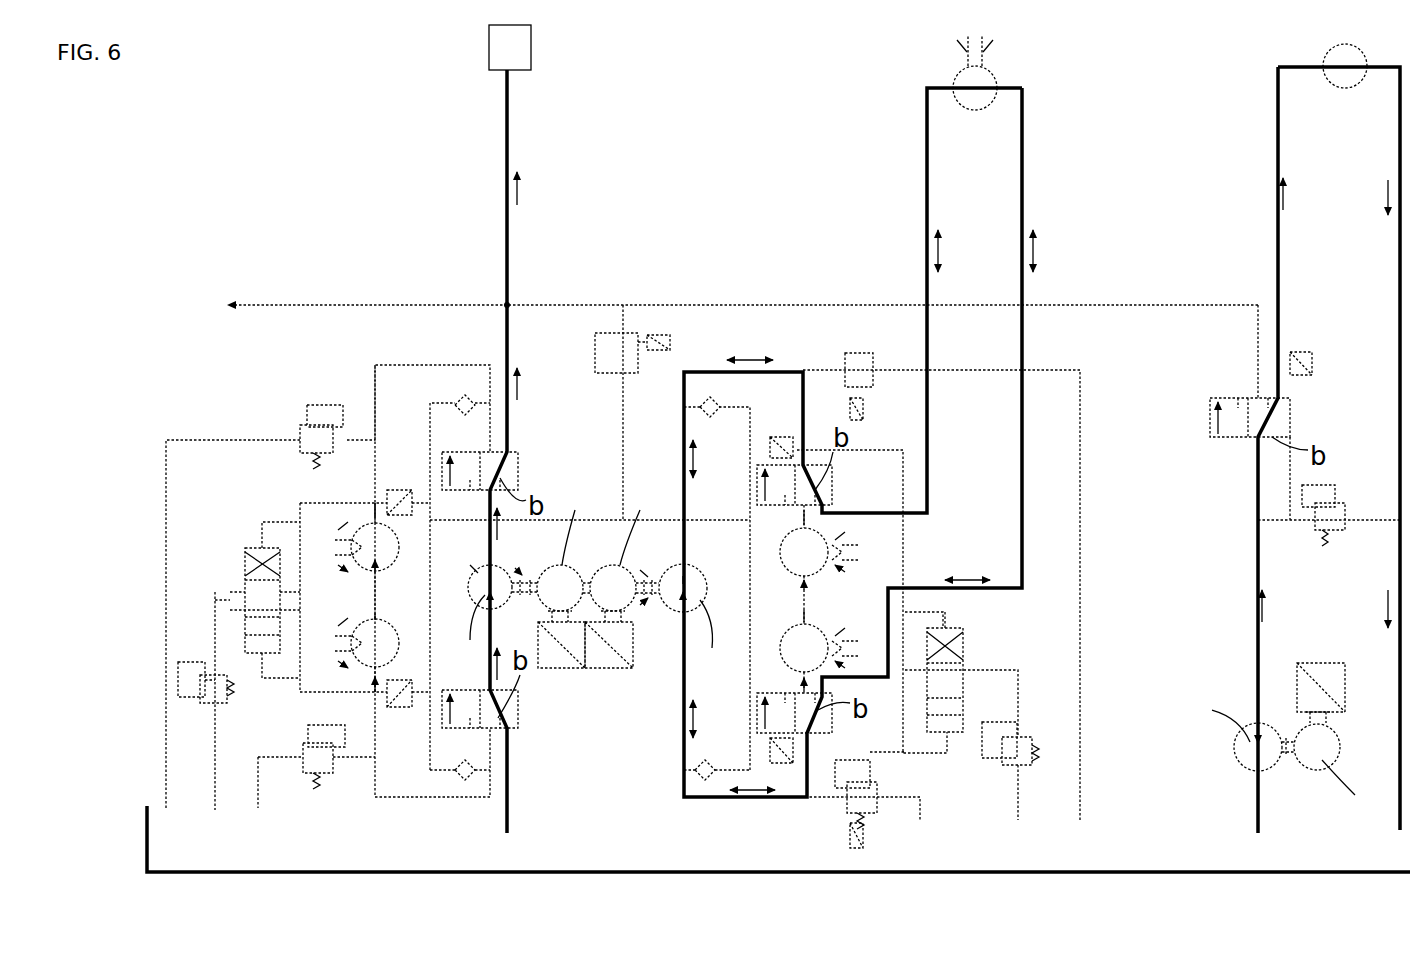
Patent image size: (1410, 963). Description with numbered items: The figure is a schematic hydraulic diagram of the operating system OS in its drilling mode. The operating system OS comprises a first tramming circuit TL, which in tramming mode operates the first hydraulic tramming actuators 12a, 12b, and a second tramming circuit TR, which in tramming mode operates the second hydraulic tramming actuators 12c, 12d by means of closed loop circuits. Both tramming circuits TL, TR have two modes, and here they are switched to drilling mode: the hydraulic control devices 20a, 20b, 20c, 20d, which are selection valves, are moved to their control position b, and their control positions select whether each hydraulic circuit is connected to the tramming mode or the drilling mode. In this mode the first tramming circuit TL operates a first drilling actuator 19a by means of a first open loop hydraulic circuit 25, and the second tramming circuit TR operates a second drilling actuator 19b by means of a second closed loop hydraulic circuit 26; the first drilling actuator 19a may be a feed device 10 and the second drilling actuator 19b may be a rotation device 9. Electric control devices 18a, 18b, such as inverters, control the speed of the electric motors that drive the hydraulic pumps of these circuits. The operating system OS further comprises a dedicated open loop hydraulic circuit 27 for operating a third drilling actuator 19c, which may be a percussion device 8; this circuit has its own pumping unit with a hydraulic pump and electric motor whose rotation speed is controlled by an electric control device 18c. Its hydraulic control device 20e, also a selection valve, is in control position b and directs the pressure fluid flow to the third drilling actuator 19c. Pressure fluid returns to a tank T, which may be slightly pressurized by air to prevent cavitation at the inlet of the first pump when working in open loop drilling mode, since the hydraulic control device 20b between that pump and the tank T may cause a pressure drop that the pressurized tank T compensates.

The percussion device 8 is at (1345, 62).
The rotation device 9 is at (975, 78).
The feed device 10 is at (505, 55).
The first hydraulic tramming actuator 12a is at (378, 545).
The first hydraulic tramming actuator 12b is at (378, 638).
The second hydraulic tramming actuator 12c is at (815, 548).
The second hydraulic tramming actuator 12d is at (815, 645).
The electric control device 18a is at (555, 672).
The electric control device 18b is at (615, 672).
The electric control device 18c is at (1312, 665).
The first drilling actuator 19a is at (458, 88).
The second drilling actuator 19b is at (896, 100).
The third drilling actuator 19c is at (1254, 67).
The hydraulic control device 20a is at (522, 468).
The hydraulic control device 20b is at (520, 728).
The hydraulic control device 20c is at (838, 465).
The hydraulic control device 20d is at (812, 740).
The hydraulic control device 20e is at (1228, 392).
The first open loop hydraulic circuit 25 is at (470, 236).
The second closed loop hydraulic circuit 26 is at (900, 224).
The dedicated open loop hydraulic circuit 27 is at (1248, 168).
The operating system OS is at (316, 176).
The first tramming circuit TL is at (275, 507).
The second tramming circuit TR is at (910, 540).
The tank T is at (1145, 870).